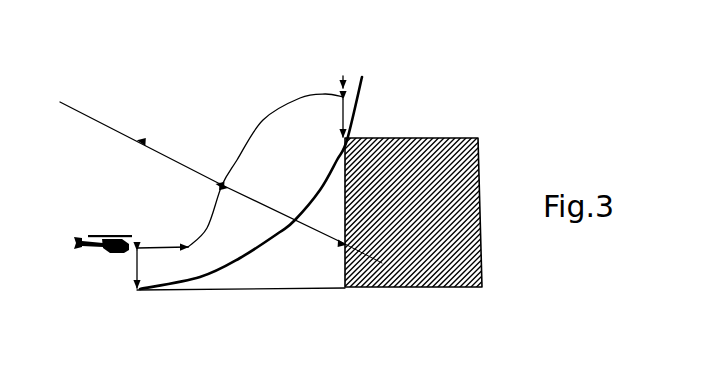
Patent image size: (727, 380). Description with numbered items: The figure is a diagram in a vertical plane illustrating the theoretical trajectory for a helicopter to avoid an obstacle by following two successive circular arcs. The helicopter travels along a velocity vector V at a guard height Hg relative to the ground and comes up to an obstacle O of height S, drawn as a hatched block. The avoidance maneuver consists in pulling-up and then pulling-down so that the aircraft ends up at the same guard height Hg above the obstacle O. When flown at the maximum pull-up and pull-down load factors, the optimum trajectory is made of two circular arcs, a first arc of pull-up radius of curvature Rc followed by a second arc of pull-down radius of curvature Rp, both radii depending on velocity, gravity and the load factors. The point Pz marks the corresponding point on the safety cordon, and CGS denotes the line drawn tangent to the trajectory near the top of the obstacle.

The point on the safety cordon Pz is at (343, 78).
The ground clearance line (tangent) CGS is at (362, 78).
The guard height Hg is at (135, 273).
The obstacle height S is at (413, 212).
The pull-up radius of curvature Rc is at (163, 153).
The pull-down radius of curvature Rp is at (263, 203).
The velocity vector V is at (181, 250).
The obstacle O is at (135, 315).